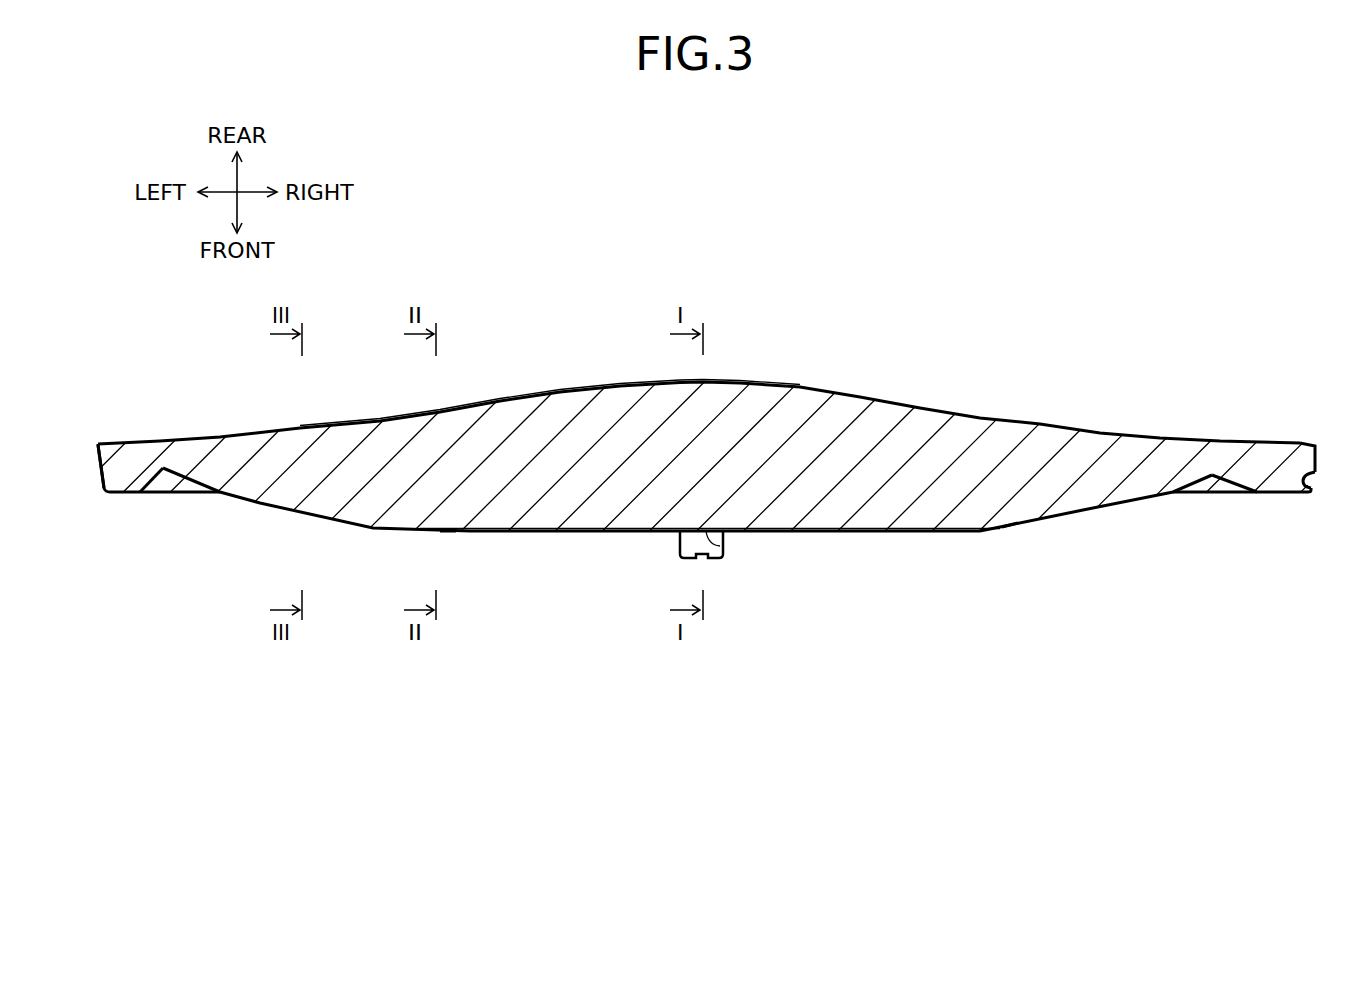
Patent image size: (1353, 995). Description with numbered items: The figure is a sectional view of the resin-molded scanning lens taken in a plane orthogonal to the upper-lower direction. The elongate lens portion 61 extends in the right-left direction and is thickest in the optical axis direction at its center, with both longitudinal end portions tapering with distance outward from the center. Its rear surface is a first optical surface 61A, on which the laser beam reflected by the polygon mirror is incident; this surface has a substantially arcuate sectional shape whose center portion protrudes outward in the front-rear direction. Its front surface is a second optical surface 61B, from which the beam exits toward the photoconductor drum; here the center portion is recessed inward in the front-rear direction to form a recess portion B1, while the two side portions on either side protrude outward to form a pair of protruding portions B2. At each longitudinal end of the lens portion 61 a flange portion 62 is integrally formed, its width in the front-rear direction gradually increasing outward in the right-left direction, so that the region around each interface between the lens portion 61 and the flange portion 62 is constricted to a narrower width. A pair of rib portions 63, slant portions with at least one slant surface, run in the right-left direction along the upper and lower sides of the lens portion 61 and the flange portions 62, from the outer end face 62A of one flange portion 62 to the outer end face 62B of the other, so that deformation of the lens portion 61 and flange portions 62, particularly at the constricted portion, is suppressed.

The lens portion 61 is at (870, 430).
The first optical surface 61A is at (714, 385).
The second optical surface 61B is at (268, 515).
The flange portion 62 is at (124, 467).
The outer end face of one flange portion 62A is at (1303, 485).
The outer end face of the other flange portion 62B is at (99, 477).
The rib portion 63 is at (1207, 493).
The recess portion B1 is at (722, 545).
The protruding portion B2 is at (447, 532).